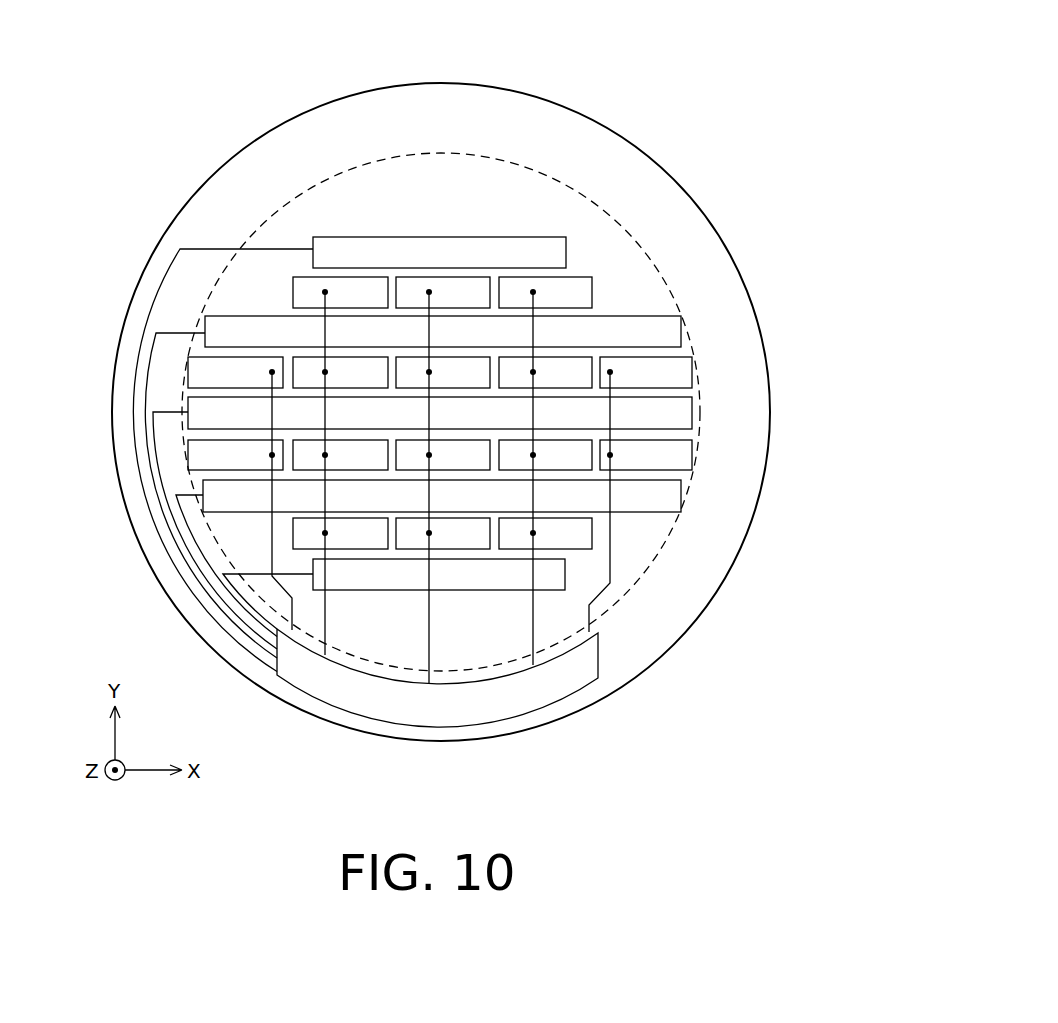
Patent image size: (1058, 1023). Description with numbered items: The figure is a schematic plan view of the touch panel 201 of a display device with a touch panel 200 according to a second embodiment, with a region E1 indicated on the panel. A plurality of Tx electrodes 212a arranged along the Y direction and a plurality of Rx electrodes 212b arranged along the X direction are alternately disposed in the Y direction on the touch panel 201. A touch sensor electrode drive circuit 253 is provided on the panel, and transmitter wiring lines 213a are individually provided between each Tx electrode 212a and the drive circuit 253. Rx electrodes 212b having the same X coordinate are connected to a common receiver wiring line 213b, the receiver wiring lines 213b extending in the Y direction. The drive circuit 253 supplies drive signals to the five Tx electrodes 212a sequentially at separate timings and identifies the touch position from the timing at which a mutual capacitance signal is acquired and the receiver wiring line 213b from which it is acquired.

The display device with a touch panel 200 is at (664, 130).
The touch panel 201 is at (481, 84).
The detection region E1 is at (395, 157).
The Tx electrodes 212a is at (360, 236).
The Rx electrodes 212b is at (582, 275).
The transmitter wiring lines 213a is at (176, 566).
The receiver wiring lines 213b is at (280, 603).
The touch sensor electrode drive circuit 253 is at (590, 664).